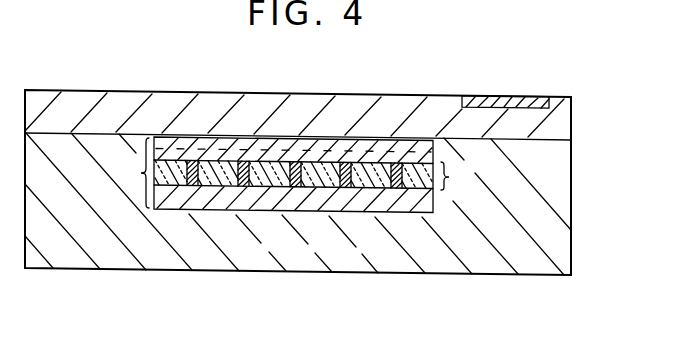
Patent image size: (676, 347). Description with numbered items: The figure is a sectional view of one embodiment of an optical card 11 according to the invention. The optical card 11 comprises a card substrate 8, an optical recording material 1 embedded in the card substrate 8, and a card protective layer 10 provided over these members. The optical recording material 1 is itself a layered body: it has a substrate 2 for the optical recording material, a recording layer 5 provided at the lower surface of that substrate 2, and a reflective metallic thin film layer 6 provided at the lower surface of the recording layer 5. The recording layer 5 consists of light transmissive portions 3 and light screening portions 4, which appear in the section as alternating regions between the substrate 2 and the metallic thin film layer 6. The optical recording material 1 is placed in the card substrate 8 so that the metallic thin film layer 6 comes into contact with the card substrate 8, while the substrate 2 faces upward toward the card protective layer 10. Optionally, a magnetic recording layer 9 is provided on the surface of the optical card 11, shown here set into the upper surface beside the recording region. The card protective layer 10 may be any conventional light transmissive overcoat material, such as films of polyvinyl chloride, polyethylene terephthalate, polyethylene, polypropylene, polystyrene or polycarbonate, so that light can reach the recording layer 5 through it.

The optical recording material 1 is at (141, 173).
The substrate for an optical recording material 2 is at (378, 150).
The light transmissive portions 3 is at (317, 186).
The light screening portions 4 is at (349, 170).
The recording layer 5 is at (311, 176).
The reflective metallic thin film layer 6 is at (270, 200).
The card substrate 8 is at (560, 242).
The magnetic recording layer 9 is at (493, 103).
The card protective layer 10 is at (560, 127).
The optical card 11 is at (142, 88).